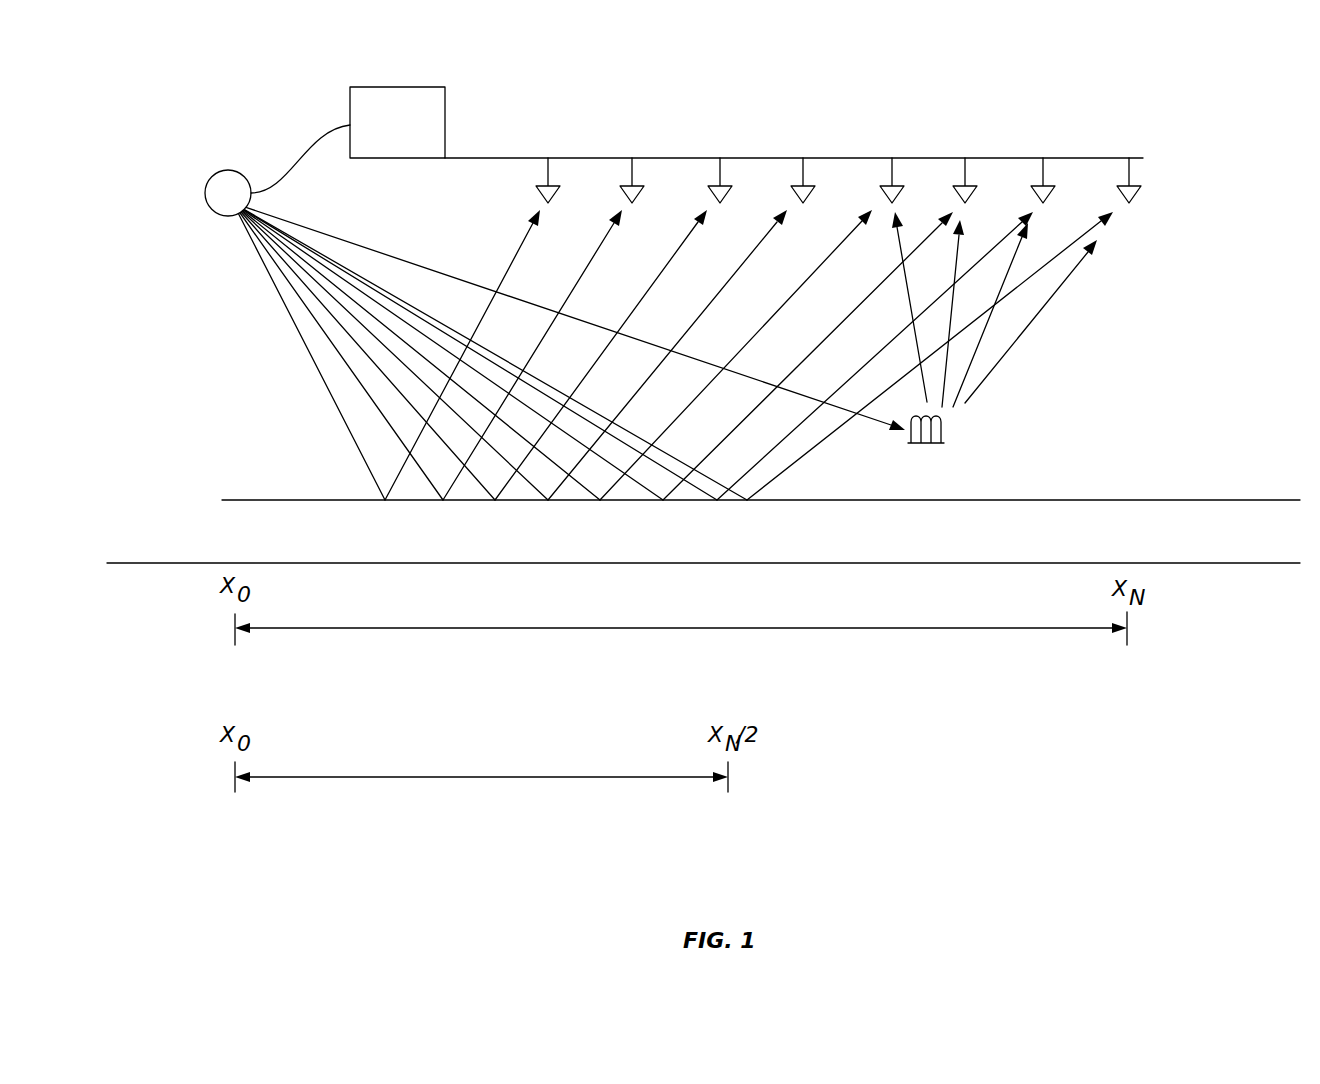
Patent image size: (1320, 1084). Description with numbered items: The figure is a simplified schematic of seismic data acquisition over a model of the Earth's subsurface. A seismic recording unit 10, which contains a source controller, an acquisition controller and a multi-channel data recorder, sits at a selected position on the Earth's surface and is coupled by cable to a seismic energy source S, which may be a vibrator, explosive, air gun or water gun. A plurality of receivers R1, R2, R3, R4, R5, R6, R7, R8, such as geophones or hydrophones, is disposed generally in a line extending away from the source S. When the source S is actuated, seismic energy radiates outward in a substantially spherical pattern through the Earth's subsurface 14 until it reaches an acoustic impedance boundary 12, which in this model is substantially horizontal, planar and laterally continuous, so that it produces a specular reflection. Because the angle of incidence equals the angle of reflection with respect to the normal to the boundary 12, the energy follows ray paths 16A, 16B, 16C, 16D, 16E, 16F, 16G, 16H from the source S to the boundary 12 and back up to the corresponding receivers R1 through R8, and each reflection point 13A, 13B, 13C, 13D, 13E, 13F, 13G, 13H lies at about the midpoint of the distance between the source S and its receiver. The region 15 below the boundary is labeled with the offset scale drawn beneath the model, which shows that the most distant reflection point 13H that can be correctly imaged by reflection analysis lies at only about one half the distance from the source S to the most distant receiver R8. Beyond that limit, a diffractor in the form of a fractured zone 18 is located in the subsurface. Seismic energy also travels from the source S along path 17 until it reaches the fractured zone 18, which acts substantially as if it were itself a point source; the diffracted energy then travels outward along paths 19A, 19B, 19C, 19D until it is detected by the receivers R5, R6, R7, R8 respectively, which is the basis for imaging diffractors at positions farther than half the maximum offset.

The seismic recording unit 10 is at (397, 87).
The acoustic impedance boundary 12 is at (1242, 499).
The reflection point 13A is at (385, 502).
The reflection point 13B is at (443, 502).
The reflection point 13C is at (495, 502).
The reflection point 13D is at (548, 502).
The reflection point 13E is at (600, 502).
The reflection point 13F is at (663, 502).
The reflection point 13G is at (717, 502).
The reflection point 13H is at (747, 502).
The Earth's subsurface 14 is at (1122, 446).
The offset axis 15 is at (1236, 644).
The ray path 16A is at (526, 236).
The ray path 16B is at (604, 238).
The ray path 16C is at (686, 238).
The ray path 16D is at (764, 238).
The ray path 16E is at (841, 243).
The ray path 16F is at (883, 280).
The ray path 16G is at (900, 332).
The ray path 16H is at (1036, 272).
The path 17 is at (402, 222).
The fractured zone 18 is at (945, 432).
The diffracted energy path 19A is at (924, 388).
The diffracted energy path 19B is at (947, 362).
The diffracted energy path 19C is at (989, 320).
The diffracted energy path 19D is at (1083, 258).
The seismic energy source S is at (230, 170).
The receiver R1 is at (555, 187).
The receiver R2 is at (639, 187).
The receiver R3 is at (727, 187).
The receiver R4 is at (810, 187).
The receiver R5 is at (899, 187).
The receiver R6 is at (972, 187).
The receiver R7 is at (1050, 187).
The receiver R8 is at (1141, 186).